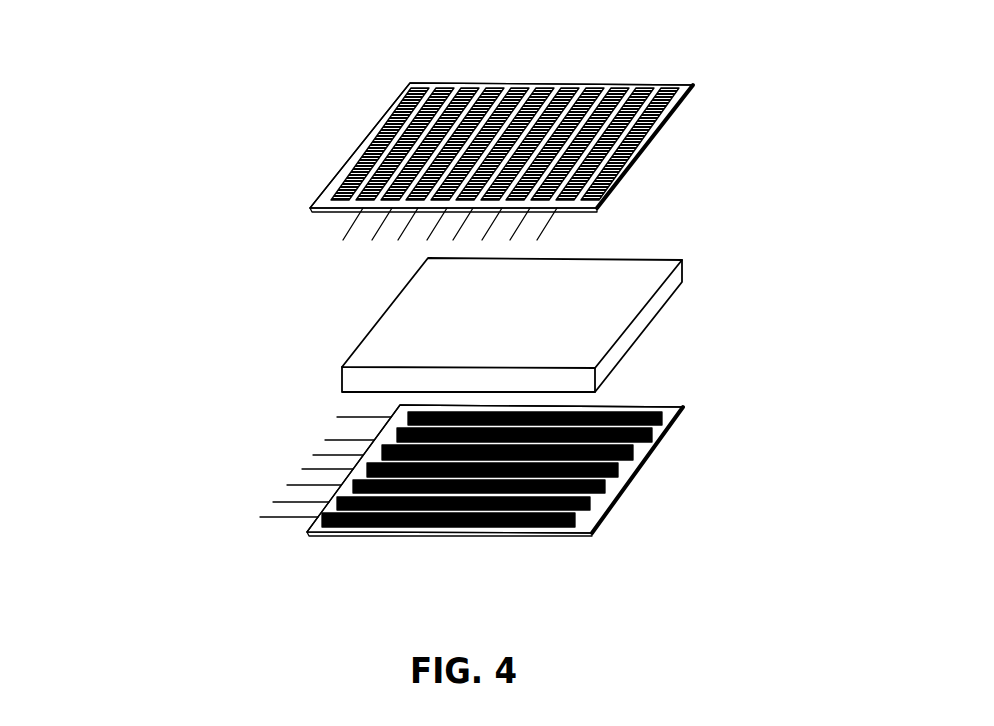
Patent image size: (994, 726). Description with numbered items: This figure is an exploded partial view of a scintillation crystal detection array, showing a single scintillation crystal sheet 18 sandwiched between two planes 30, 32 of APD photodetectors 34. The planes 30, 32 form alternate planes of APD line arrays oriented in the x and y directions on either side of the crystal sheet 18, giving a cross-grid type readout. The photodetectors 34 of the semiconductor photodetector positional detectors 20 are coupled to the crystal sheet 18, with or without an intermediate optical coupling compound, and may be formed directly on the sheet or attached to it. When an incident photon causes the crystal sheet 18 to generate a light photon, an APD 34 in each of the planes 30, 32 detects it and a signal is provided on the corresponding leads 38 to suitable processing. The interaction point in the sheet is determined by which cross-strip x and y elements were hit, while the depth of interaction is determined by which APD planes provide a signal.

The crystal sheet 18 is at (548, 313).
The semiconductor photodetector positional detector 20 is at (648, 147).
The plane of APD photodetectors 30 is at (262, 135).
The plane of APD photodetectors 32 is at (292, 550).
The APD photodetector 34 is at (693, 87).
The lead 38 is at (342, 223).